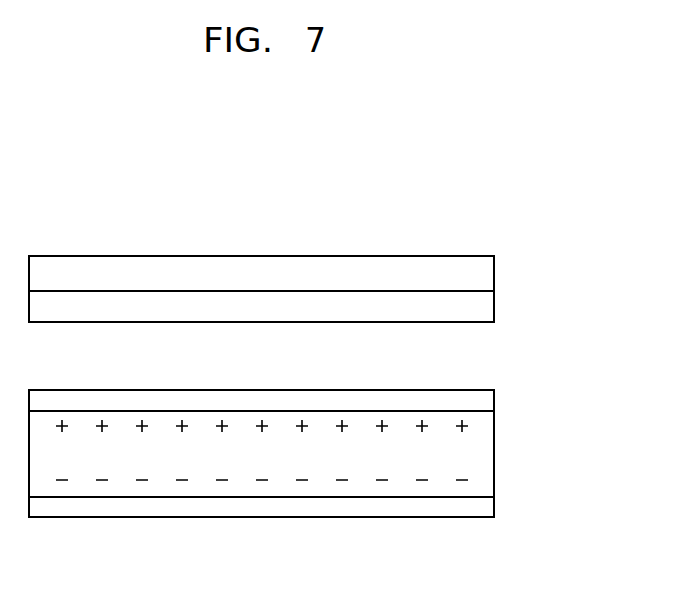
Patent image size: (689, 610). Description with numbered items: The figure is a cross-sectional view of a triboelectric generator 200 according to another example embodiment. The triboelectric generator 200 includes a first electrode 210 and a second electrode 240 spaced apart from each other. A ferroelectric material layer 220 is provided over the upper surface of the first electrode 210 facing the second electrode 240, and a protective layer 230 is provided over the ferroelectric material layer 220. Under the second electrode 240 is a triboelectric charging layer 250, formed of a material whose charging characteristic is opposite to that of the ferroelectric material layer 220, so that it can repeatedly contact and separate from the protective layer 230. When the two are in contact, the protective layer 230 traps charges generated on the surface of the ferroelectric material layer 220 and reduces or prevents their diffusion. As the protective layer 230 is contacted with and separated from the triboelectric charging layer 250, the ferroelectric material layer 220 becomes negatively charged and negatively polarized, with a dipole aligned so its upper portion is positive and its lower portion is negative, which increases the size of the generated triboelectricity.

The triboelectric generator 200 is at (486, 225).
The first electrode 210 is at (494, 507).
The ferroelectric material layer 220 is at (494, 453).
The protective layer 230 is at (494, 400).
The second electrode 240 is at (494, 273).
The triboelectric charging layer 250 is at (494, 307).